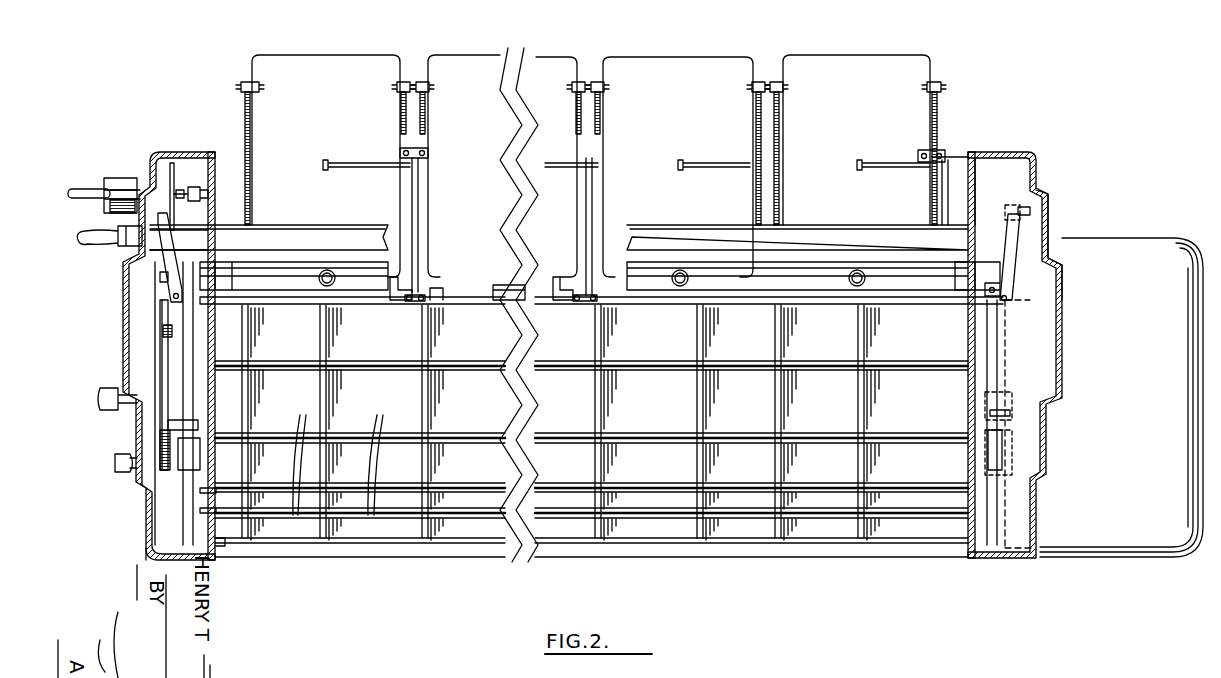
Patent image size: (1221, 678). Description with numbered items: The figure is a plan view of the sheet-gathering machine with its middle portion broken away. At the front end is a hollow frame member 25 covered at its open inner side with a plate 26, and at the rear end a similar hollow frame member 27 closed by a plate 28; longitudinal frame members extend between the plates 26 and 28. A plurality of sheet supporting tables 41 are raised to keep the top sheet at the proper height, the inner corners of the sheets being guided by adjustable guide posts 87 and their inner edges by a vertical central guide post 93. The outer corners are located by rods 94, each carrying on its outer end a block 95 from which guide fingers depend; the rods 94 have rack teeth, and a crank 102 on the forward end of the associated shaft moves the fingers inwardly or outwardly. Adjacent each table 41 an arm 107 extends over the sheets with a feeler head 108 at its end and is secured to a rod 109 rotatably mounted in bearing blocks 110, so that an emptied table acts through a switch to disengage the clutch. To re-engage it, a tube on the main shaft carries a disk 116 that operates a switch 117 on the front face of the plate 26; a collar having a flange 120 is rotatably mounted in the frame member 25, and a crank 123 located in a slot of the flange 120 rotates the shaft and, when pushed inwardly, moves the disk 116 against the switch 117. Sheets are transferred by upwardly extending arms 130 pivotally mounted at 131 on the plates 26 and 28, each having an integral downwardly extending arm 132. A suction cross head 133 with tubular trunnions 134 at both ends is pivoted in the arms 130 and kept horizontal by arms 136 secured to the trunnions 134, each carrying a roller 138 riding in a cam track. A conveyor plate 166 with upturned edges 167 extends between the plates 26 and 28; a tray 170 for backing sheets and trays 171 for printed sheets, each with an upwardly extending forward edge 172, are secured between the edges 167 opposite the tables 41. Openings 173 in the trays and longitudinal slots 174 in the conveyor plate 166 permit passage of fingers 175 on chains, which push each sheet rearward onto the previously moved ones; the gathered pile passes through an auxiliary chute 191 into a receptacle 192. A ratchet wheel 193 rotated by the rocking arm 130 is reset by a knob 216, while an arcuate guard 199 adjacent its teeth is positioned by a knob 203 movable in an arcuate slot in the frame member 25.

The hollow frame member 25 is at (146, 535).
The plate 26 is at (216, 546).
The hollow frame member 27 is at (1040, 184).
The plate 28 is at (977, 185).
The sheet supporting tables 41 is at (332, 94).
The guide posts 87 is at (402, 282).
The vertical central guide post 93 is at (506, 286).
The rods 94 is at (940, 118).
The block 95 is at (246, 82).
The crank 102 is at (96, 246).
The arm 107 is at (389, 163).
The feeler head 108 is at (326, 162).
The rod 109 is at (420, 204).
The bearing blocks 110 is at (582, 162).
The disk 116 is at (171, 166).
The switch 117 is at (194, 186).
The flange 120 is at (122, 178).
The crank 123 is at (86, 190).
The upwardly extending arms 130 is at (190, 306).
The pivot 131 is at (186, 426).
The downwardly extending arm 132 is at (190, 452).
The suction cross head 133 is at (812, 286).
The tubular trunnions 134 is at (1002, 291).
The arms 136 is at (162, 222).
The roller 138 is at (1040, 214).
The conveyor plate 166 is at (394, 350).
The upturned edges 167 is at (640, 305).
The tray 170 is at (302, 350).
The trays 171 is at (484, 417).
The upwardly extending forward edge 172 is at (596, 349).
The openings 173 is at (275, 374).
The longitudinal slots 174 is at (361, 374).
The fingers 175 is at (202, 511).
The auxiliary chute 191 is at (1010, 508).
The receptacle 192 is at (1146, 446).
The ratchet wheel 193 is at (164, 332).
The guard 199 is at (164, 374).
The knob 203 is at (114, 464).
The knob 216 is at (100, 395).